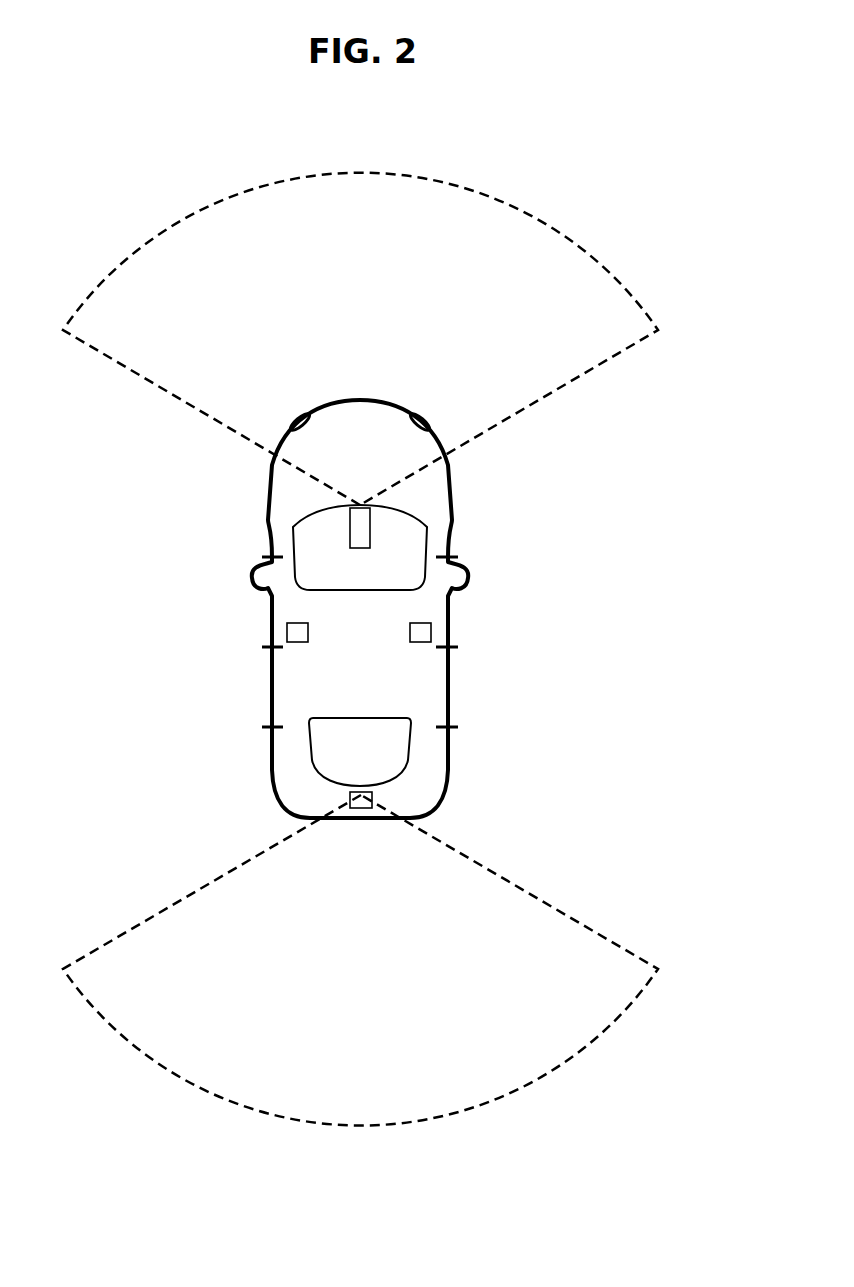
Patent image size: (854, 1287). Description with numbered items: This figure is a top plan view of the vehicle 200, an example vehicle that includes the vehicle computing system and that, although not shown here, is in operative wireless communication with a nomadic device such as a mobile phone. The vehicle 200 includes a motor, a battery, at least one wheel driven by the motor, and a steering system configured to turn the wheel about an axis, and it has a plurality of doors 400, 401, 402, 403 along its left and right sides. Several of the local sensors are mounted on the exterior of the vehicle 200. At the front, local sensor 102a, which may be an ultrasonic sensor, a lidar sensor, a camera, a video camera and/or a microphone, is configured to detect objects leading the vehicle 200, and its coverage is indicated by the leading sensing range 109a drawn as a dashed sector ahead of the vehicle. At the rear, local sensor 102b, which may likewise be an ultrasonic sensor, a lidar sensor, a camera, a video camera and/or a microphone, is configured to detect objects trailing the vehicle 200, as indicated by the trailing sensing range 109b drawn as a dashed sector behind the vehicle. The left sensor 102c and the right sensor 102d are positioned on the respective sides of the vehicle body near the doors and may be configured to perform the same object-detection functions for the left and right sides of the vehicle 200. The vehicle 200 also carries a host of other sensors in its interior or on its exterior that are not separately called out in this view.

The vehicle 200 is at (707, 162).
The leading sensing range 109a is at (633, 345).
The trailing sensing range 109b is at (635, 953).
The local sensor 102a is at (360, 532).
The local sensor 102b is at (360, 805).
The left sensor 102c is at (298, 635).
The right sensor 102d is at (421, 635).
The door 400 is at (252, 629).
The door 401 is at (252, 685).
The door 402 is at (466, 685).
The door 403 is at (466, 629).